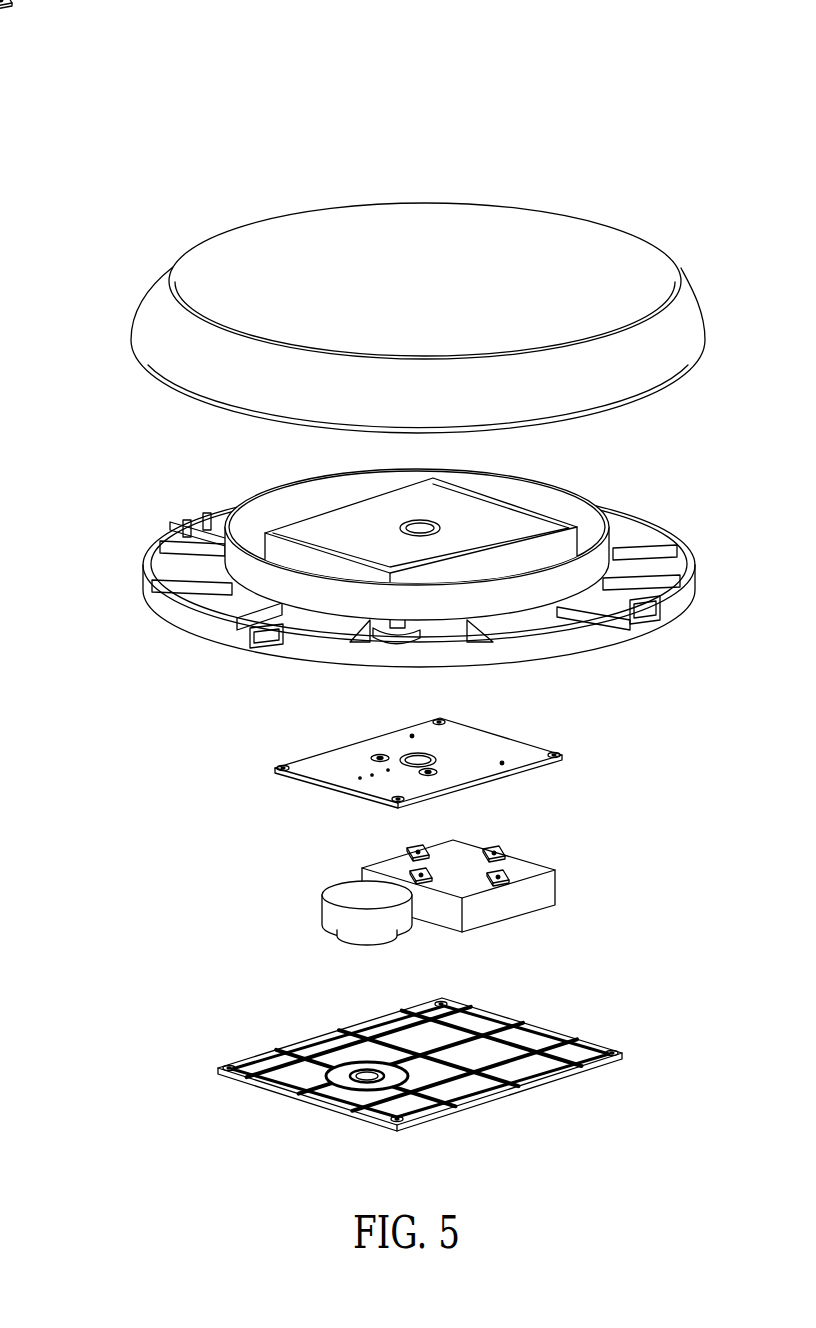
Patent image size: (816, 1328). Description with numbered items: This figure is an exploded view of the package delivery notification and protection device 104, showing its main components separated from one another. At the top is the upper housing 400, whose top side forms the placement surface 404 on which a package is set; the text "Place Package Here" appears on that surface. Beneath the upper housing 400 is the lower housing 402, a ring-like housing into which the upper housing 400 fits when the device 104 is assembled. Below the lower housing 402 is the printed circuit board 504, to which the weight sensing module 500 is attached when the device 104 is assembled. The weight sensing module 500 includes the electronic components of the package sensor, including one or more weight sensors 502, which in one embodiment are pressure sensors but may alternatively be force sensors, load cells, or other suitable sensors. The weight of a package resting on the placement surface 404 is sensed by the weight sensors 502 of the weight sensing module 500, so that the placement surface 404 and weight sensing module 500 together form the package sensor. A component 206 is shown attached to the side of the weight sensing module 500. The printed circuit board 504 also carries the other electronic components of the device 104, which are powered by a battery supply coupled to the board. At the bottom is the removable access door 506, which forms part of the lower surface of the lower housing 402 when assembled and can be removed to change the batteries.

The package delivery notification and protection device 104 is at (120, 118).
The upper housing 400 is at (148, 323).
The placement surface 404 is at (532, 242).
The lower housing 402 is at (153, 590).
The printed circuit board 504 is at (290, 762).
The weight sensing module 500 is at (583, 862).
The weight sensors 502 is at (420, 873).
The sensor component 206 is at (337, 912).
The removable access door 506 is at (565, 1033).